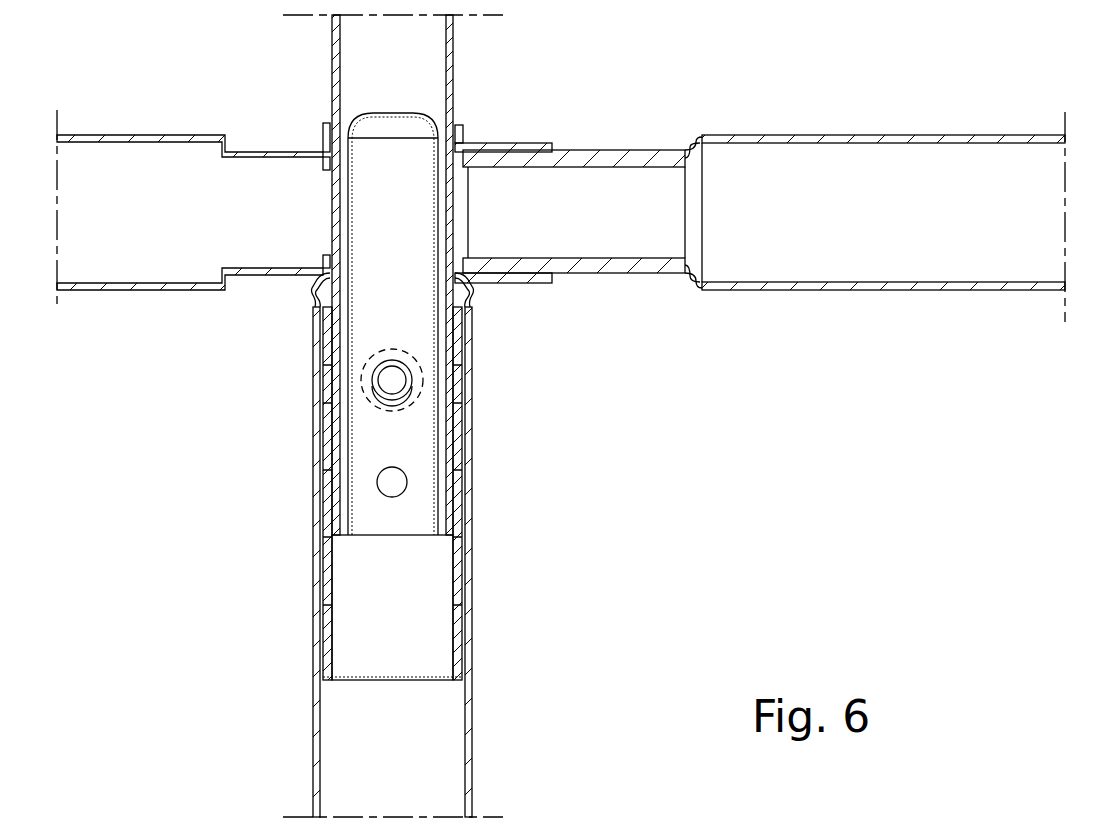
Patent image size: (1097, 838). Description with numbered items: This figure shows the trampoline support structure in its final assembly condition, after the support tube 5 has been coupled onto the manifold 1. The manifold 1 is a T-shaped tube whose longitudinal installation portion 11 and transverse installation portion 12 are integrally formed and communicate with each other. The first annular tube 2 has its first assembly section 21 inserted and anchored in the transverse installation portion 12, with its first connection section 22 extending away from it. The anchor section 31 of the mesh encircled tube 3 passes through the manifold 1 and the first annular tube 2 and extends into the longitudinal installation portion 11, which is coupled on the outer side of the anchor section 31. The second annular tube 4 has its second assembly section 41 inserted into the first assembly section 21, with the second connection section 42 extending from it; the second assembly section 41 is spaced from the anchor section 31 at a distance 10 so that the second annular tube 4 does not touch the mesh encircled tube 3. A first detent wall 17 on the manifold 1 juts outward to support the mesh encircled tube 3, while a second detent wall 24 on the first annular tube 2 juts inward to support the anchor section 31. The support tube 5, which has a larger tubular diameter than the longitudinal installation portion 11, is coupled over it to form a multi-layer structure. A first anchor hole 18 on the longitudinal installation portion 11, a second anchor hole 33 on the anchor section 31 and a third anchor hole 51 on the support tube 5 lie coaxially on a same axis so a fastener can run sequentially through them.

The manifold 1 is at (492, 296).
The first annular tube 2 is at (116, 128).
The mesh encircled tube 3 is at (322, 52).
The second annular tube 4 is at (883, 300).
The support tube 5 is at (304, 653).
The distance 10 is at (446, 223).
The longitudinal installation portion 11 is at (465, 578).
The transverse installation portion 12 is at (510, 143).
The first detent wall 17 is at (322, 133).
The first anchor hole 18 is at (373, 410).
The first assembly section 21 is at (657, 275).
The first connection section 22 is at (96, 292).
The second detent wall 24 is at (300, 292).
The anchor section 31 is at (452, 72).
The second anchor hole 33 is at (405, 395).
The second assembly section 41 is at (657, 150).
The second connection section 42 is at (822, 135).
The third anchor hole 51 is at (362, 367).